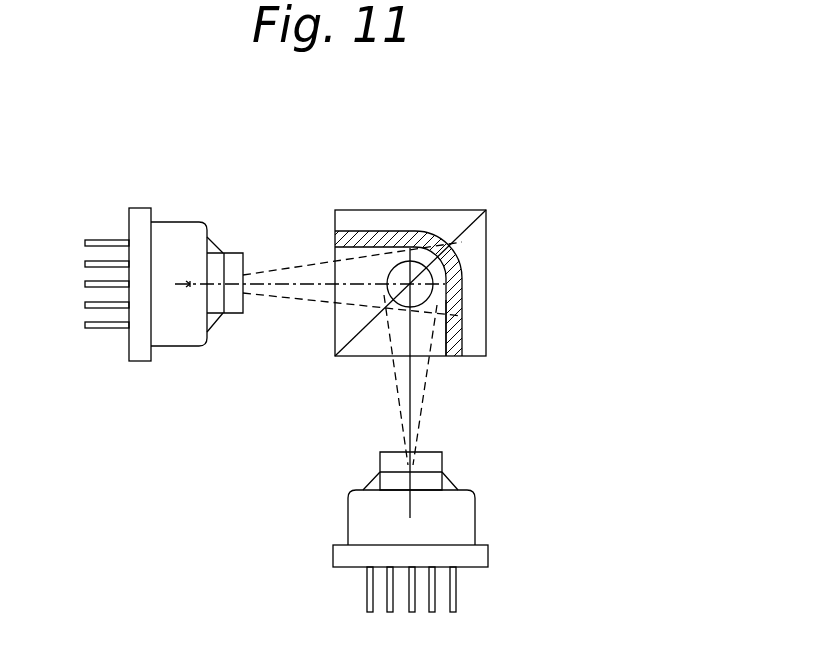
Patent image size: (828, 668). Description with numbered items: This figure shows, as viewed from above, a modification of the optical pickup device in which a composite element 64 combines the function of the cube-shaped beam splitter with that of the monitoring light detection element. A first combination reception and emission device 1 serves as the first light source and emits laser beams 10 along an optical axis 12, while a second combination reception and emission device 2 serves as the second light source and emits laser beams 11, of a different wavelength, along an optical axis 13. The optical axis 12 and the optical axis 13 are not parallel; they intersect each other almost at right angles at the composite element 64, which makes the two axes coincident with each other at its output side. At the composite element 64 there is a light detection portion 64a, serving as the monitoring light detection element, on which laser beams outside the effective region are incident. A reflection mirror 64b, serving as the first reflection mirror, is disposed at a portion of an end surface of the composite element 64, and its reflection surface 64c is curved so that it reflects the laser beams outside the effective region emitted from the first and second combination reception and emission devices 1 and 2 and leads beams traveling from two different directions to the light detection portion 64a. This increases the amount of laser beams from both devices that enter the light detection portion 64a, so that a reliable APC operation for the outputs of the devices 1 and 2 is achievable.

The first combination reception and emission device 1 is at (185, 346).
The second combination reception and emission device 2 is at (475, 512).
The laser beams 10 is at (302, 300).
The laser beams 11 is at (424, 386).
The optical axis 12 is at (259, 288).
The optical axis 13 is at (410, 417).
The composite element 64 is at (445, 230).
The light detection portion 64a is at (433, 297).
The reflection mirror 64b is at (460, 247).
The reflection surface 64c is at (446, 344).